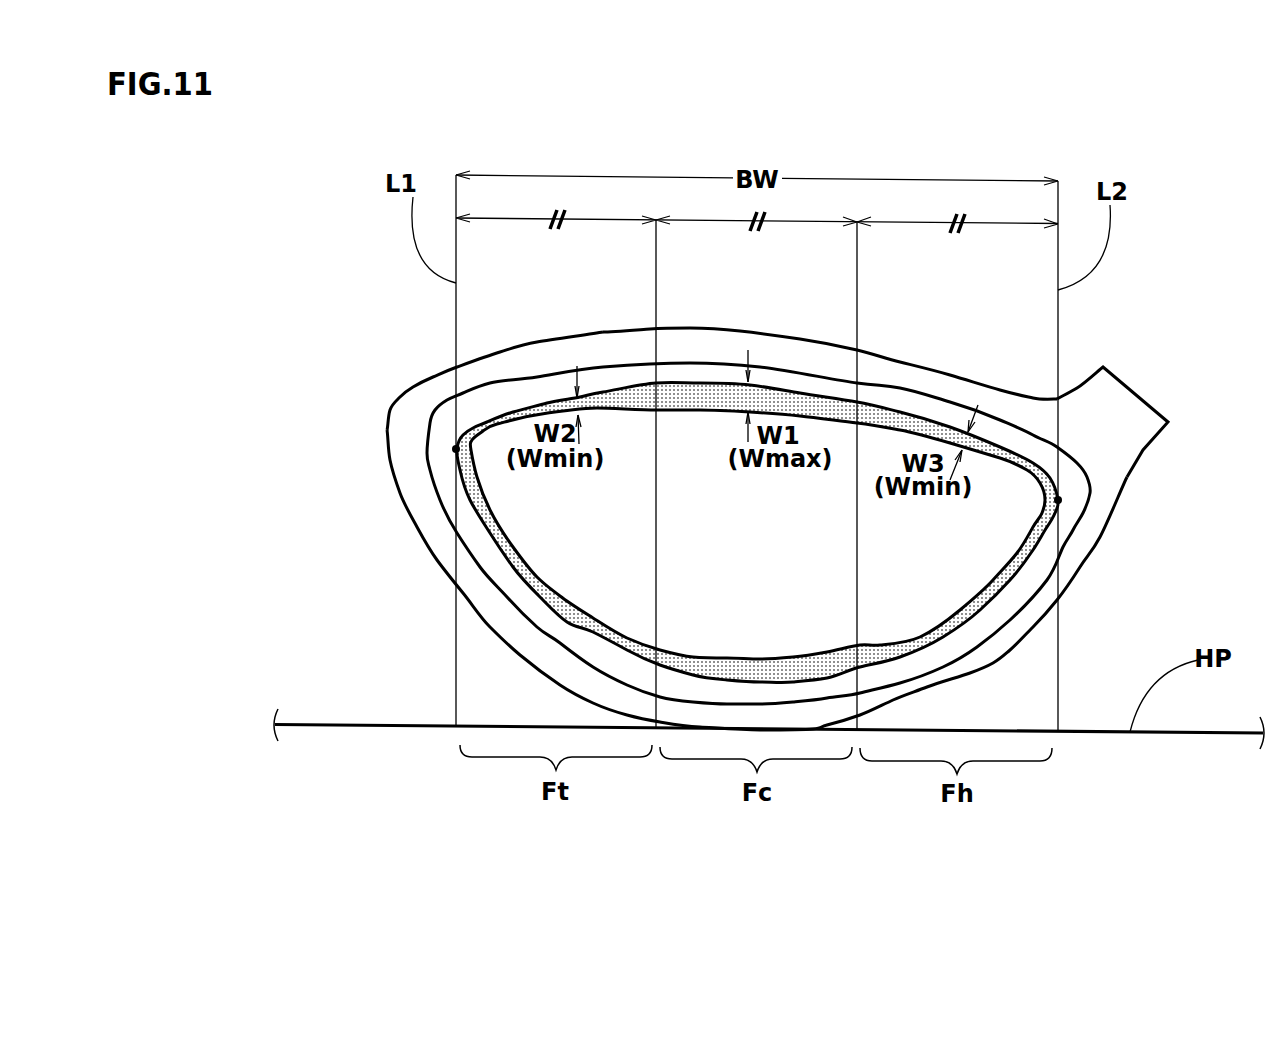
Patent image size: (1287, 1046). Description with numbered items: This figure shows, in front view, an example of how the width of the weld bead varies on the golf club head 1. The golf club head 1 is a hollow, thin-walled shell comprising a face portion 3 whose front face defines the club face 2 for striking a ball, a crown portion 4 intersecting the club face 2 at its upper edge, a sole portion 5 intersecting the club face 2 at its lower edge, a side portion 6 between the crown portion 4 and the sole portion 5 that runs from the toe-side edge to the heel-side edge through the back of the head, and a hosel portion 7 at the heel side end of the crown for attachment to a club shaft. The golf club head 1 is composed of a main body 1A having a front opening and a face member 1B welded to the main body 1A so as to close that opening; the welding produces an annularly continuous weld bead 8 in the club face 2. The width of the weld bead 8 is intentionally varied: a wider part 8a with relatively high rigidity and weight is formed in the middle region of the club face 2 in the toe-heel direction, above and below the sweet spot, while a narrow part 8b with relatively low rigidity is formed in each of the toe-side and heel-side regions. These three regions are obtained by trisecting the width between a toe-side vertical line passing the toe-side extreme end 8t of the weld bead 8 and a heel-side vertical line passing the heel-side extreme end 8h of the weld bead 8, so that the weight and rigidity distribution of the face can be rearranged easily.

The golf club head 1 is at (1123, 307).
The main body 1A is at (381, 393).
The face member 1B is at (522, 511).
The club face 2 is at (995, 535).
The face portion 3 is at (586, 597).
The crown portion 4 is at (599, 345).
The sole portion 5 is at (822, 741).
The side portion 6 is at (438, 557).
The hosel portion 7 is at (1152, 379).
The weld bead 8 is at (503, 415).
The wider part 8a is at (710, 400).
The narrow part 8b is at (535, 565).
The toe-side extreme end 8t is at (456, 449).
The heel-side extreme end 8h is at (1058, 500).